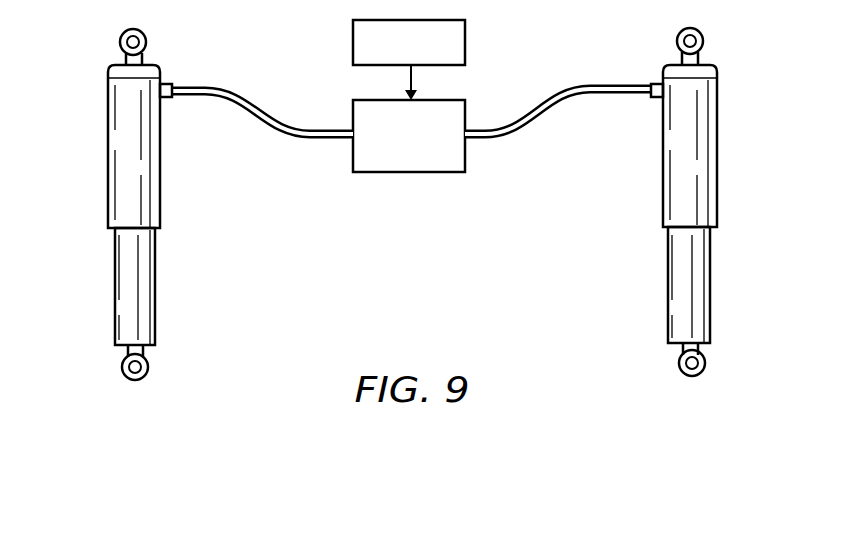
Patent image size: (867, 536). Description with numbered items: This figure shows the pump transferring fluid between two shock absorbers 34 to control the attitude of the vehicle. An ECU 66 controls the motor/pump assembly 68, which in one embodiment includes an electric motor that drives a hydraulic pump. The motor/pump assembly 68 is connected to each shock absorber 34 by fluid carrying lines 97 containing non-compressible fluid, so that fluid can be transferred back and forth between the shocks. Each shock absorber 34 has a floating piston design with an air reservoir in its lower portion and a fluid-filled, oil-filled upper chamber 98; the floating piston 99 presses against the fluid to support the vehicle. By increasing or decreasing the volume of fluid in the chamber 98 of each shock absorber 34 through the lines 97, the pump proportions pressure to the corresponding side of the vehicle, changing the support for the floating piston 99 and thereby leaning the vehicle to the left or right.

The shock absorber 34 is at (413, 204).
The ECU 66 is at (353, 41).
The motor/pump assembly 68 is at (392, 173).
The lines 97 is at (229, 87).
The fluid-filled upper chamber 98 is at (108, 186).
The floating piston 99 is at (114, 250).